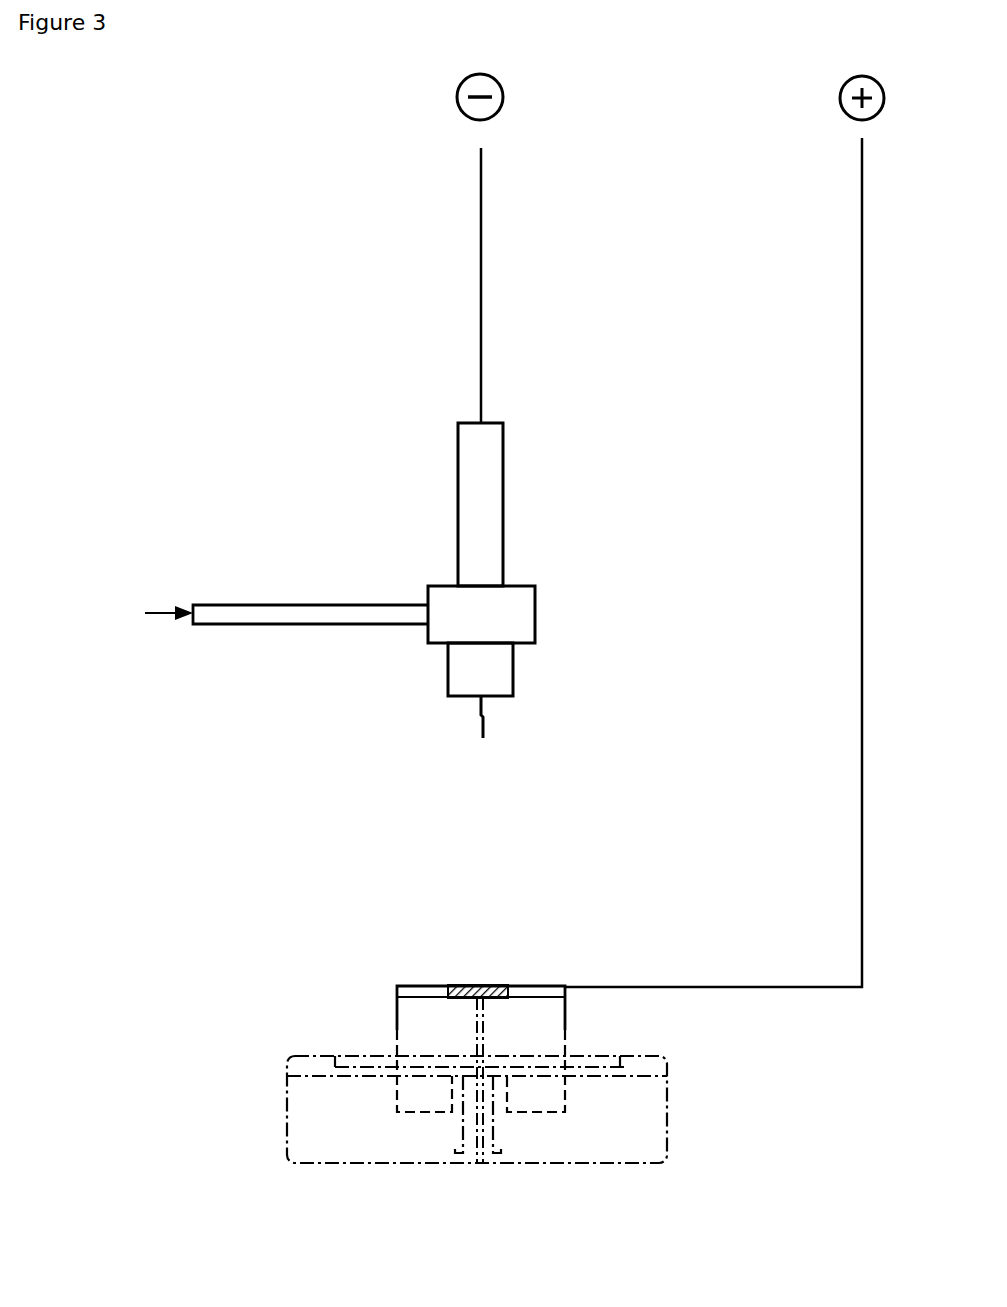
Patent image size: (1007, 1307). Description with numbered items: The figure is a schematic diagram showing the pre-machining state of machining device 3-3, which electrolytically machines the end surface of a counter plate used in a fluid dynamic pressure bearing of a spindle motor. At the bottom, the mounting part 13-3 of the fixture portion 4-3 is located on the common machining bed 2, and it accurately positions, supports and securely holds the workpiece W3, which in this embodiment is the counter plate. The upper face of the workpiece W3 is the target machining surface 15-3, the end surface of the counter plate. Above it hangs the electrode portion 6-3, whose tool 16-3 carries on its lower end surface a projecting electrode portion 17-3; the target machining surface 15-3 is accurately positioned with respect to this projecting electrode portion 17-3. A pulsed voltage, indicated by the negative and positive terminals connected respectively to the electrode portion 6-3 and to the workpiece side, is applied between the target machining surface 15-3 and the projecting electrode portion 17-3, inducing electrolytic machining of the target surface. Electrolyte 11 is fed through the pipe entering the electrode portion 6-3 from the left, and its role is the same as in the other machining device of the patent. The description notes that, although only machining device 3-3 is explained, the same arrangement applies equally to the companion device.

The common machining bed 2 is at (668, 1123).
The machining device 3-3 is at (347, 810).
The fixture portion 4-3 is at (368, 1043).
The electrode portion 6-3 is at (562, 585).
The electrolyte 11 is at (226, 614).
The mounting part 13-3 is at (397, 1017).
The target machining surface 15-3 is at (470, 984).
The tool 16-3 is at (524, 662).
The projecting electrode portion 17-3 is at (475, 739).
The workpiece W3 is at (497, 985).